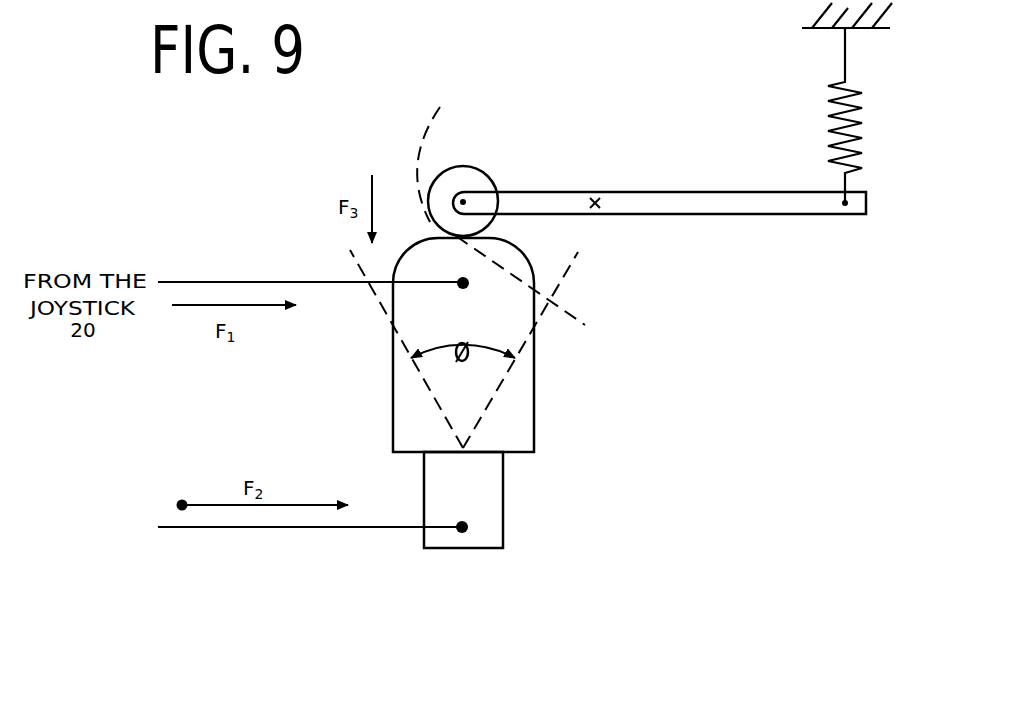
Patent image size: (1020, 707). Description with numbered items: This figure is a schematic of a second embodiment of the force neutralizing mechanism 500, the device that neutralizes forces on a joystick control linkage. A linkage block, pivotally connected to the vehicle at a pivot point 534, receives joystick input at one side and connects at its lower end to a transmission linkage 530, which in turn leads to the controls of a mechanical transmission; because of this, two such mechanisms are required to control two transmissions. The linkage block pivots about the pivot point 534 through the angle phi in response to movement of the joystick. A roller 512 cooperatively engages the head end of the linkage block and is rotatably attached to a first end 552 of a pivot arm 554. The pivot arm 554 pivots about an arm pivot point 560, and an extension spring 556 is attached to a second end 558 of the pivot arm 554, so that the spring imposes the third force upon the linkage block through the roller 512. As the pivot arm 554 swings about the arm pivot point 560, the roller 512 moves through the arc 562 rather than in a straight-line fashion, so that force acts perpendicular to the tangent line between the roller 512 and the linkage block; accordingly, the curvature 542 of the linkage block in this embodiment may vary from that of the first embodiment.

The force neutralizing mechanism 500 is at (315, 153).
The roller 512 is at (457, 180).
The transmission linkage 530 is at (250, 530).
The pivot point 534 is at (468, 454).
The curvature 542 is at (523, 250).
The first end 552 is at (475, 200).
The pivot arm 554 is at (750, 210).
The extension spring 556 is at (869, 107).
The second end 558 is at (833, 200).
The arm pivot point 560 is at (598, 202).
The arc 562 is at (412, 158).